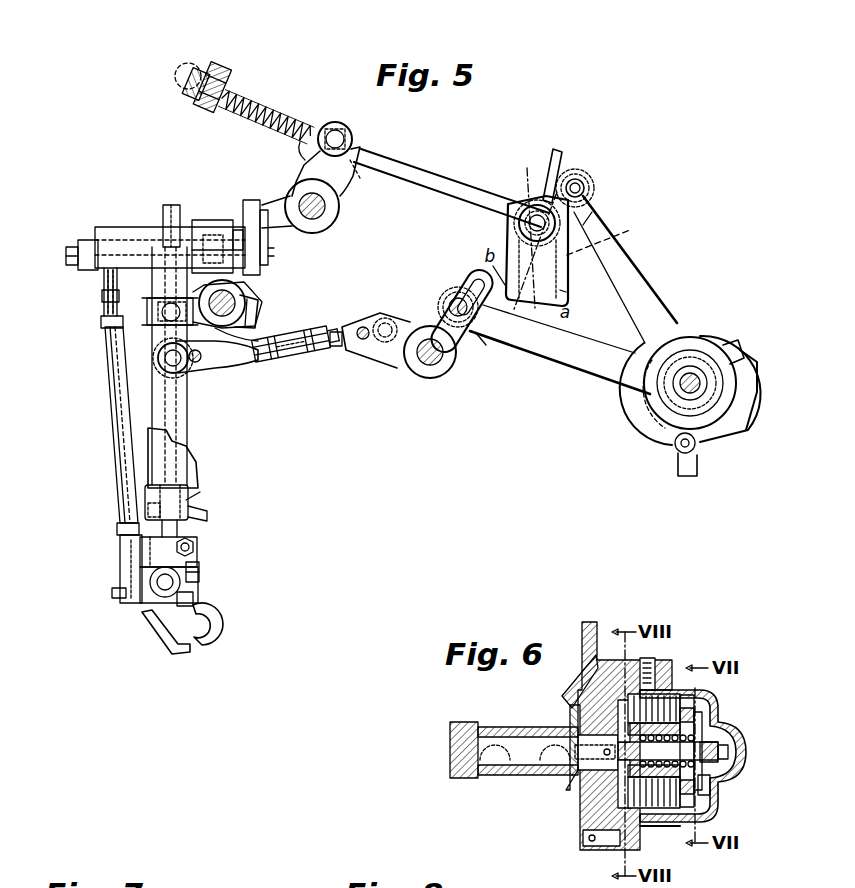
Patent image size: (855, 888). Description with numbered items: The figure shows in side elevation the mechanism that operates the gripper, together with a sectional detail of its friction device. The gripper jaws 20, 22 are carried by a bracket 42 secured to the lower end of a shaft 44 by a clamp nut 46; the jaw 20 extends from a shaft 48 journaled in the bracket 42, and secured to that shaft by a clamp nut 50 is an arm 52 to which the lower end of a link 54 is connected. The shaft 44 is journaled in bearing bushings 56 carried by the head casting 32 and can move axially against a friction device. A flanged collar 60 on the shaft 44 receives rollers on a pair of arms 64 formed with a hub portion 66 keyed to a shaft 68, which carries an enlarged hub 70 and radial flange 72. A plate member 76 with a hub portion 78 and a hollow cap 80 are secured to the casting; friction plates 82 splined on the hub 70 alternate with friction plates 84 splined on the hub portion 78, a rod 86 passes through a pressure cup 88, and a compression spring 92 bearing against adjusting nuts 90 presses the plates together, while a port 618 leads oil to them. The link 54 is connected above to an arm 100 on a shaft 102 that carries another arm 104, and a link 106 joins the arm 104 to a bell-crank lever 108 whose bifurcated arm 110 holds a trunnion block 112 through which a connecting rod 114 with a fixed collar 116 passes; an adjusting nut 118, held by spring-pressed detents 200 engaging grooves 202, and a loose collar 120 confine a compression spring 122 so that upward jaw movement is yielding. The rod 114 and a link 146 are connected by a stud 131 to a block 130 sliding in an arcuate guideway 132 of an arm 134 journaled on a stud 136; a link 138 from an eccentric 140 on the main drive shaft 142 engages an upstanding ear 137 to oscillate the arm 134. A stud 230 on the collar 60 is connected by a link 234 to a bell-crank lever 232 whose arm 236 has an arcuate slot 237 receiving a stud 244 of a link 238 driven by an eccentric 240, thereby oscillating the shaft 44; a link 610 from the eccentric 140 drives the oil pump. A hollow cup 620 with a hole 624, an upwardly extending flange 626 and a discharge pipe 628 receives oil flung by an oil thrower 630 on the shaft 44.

In FIG. 5, the adjusting nut 118 is at (220, 70).
In FIG. 5, the grooves 202 is at (188, 63).
In FIG. 5, the spring-pressed detents 200 is at (222, 82).
In FIG. 5, the compression spring 122 is at (278, 103).
In FIG. 5, the loose collar 120 is at (330, 120).
In FIG. 5, the bifurcated arm 110 is at (354, 136).
In FIG. 5, the trunnion block 112 is at (312, 155).
In FIG. 5, the fixed collar 116 is at (369, 177).
In FIG. 5, the connecting rod 114 is at (445, 176).
In FIG. 5, the link 146 is at (553, 160).
In FIG. 5, the bell-crank lever 108 is at (288, 195).
In FIG. 5, the link 106 is at (268, 238).
In FIG. 5, the arm 104 is at (212, 220).
In FIG. 5, the arm 100 is at (82, 240).
In FIG. 5, the shaft 102 is at (66, 250).
In FIG. 5, the head casting 32 is at (125, 227).
In FIG. 6, the head casting 32 is at (460, 722).
In FIG. 5, the shaft 44 is at (182, 548).
In FIG. 5, the flanged collar 60 is at (155, 290).
In FIG. 5, the bearing bushings 56 is at (190, 424).
In FIG. 5, the hub portion 66 is at (250, 288).
In FIG. 6, the hub portion 66 is at (508, 727).
In FIG. 5, the shaft 68 is at (258, 304).
In FIG. 6, the shaft 68 is at (538, 727).
In FIG. 5, the arms 64 is at (260, 332).
In FIG. 5, the stud 230 is at (186, 368).
In FIG. 5, the link 234 is at (302, 358).
In FIG. 5, the bell-crank lever 232 is at (412, 364).
In FIG. 5, the arm 236 is at (440, 313).
In FIG. 5, the arcuate slot 237 is at (476, 283).
In FIG. 5, the stud 244 is at (490, 348).
In FIG. 5, the link 238 is at (558, 374).
In FIG. 5, the stud 131 is at (518, 226).
In FIG. 5, the arcuate guideway 132 is at (560, 275).
In FIG. 5, the arm 134 is at (566, 292).
In FIG. 5, the stud 136 is at (594, 213).
In FIG. 5, the upstanding ear 137 is at (594, 190).
In FIG. 5, the block 130 is at (614, 236).
In FIG. 5, the link 138 is at (648, 278).
In FIG. 5, the eccentric 140 is at (708, 345).
In FIG. 5, the eccentric 240 is at (700, 368).
In FIG. 5, the main drive shaft 142 is at (700, 382).
In FIG. 5, the link 610 is at (700, 464).
In FIG. 5, the oil thrower 630 is at (200, 492).
In FIG. 5, the hollow cup 620 is at (190, 503).
In FIG. 5, the discharge pipe 628 is at (208, 514).
In FIG. 5, the flange 626 is at (148, 506).
In FIG. 5, the link 54 is at (118, 510).
In FIG. 5, the hole 624 is at (120, 545).
In FIG. 5, the clamp nut 46 is at (196, 548).
In FIG. 5, the bracket 42 is at (200, 567).
In FIG. 5, the shaft 48 is at (182, 586).
In FIG. 5, the clamp nut 50 is at (196, 600).
In FIG. 5, the gripper jaw 20 is at (220, 628).
In FIG. 5, the gripper jaw 22 is at (163, 640).
In FIG. 5, the arm 52 is at (118, 600).
In FIG. 6, the friction plates 84 is at (650, 660).
In FIG. 6, the friction plates 82 is at (668, 692).
In FIG. 6, the port 618 is at (580, 664).
In FIG. 6, the radial flange 72 is at (618, 705).
In FIG. 6, the rod 86 is at (628, 790).
In FIG. 6, the plate member 76 is at (608, 848).
In FIG. 6, the hub portion 78 is at (676, 826).
In FIG. 6, the enlarged hub 70 is at (696, 712).
In FIG. 6, the compression spring 92 is at (700, 728).
In FIG. 6, the adjusting nuts 90 is at (728, 748).
In FIG. 6, the hollow cap 80 is at (746, 756).
In FIG. 6, the pressure cup 88 is at (710, 790).